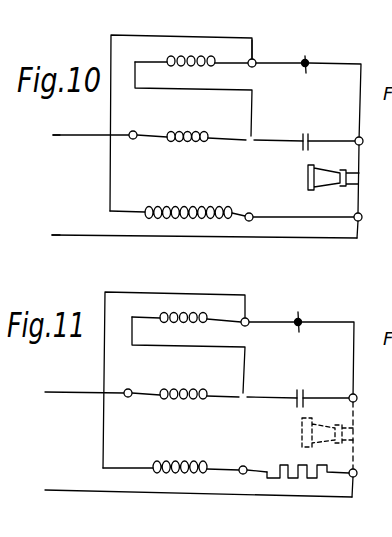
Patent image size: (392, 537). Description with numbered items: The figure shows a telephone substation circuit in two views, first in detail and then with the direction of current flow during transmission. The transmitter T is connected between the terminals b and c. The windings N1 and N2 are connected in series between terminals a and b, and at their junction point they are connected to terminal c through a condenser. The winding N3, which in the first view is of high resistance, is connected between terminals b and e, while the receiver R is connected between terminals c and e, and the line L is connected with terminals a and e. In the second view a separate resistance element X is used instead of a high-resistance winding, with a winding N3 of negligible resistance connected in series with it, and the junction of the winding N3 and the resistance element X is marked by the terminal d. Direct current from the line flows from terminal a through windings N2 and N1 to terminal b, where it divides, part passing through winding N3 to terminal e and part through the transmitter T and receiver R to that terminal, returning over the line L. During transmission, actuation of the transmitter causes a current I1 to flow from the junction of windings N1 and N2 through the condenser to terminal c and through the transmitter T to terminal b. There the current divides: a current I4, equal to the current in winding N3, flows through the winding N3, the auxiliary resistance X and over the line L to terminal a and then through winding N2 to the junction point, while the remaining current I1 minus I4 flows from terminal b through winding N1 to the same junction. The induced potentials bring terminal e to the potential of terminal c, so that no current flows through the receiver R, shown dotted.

In FIG. 10, the winding N1 is at (195, 55).
In FIG. 11, the winding N1 is at (183, 318).
In FIG. 10, the winding N2 is at (187, 126).
In FIG. 11, the winding N2 is at (183, 394).
In FIG. 10, the winding N3 is at (205, 220).
In FIG. 11, the winding N3 is at (180, 456).
In FIG. 10, the terminal a is at (132, 146).
In FIG. 11, the terminal a is at (129, 382).
In FIG. 10, the terminal b is at (257, 53).
In FIG. 11, the terminal b is at (251, 313).
In FIG. 10, the terminal c is at (365, 142).
In FIG. 11, the terminal c is at (360, 400).
In FIG. 10, the terminal d is at (255, 225).
In FIG. 11, the terminal d is at (248, 460).
In FIG. 10, the terminal e is at (365, 218).
In FIG. 11, the terminal e is at (360, 475).
In FIG. 10, the transmitter T is at (288, 76).
In FIG. 10, the receiver R is at (333, 170).
In FIG. 10, the line L is at (79, 142).
In FIG. 11, the resistance element X is at (308, 481).
In FIG. 11, the current I1 is at (151, 330).
In FIG. 11, the current I4 is at (85, 403).